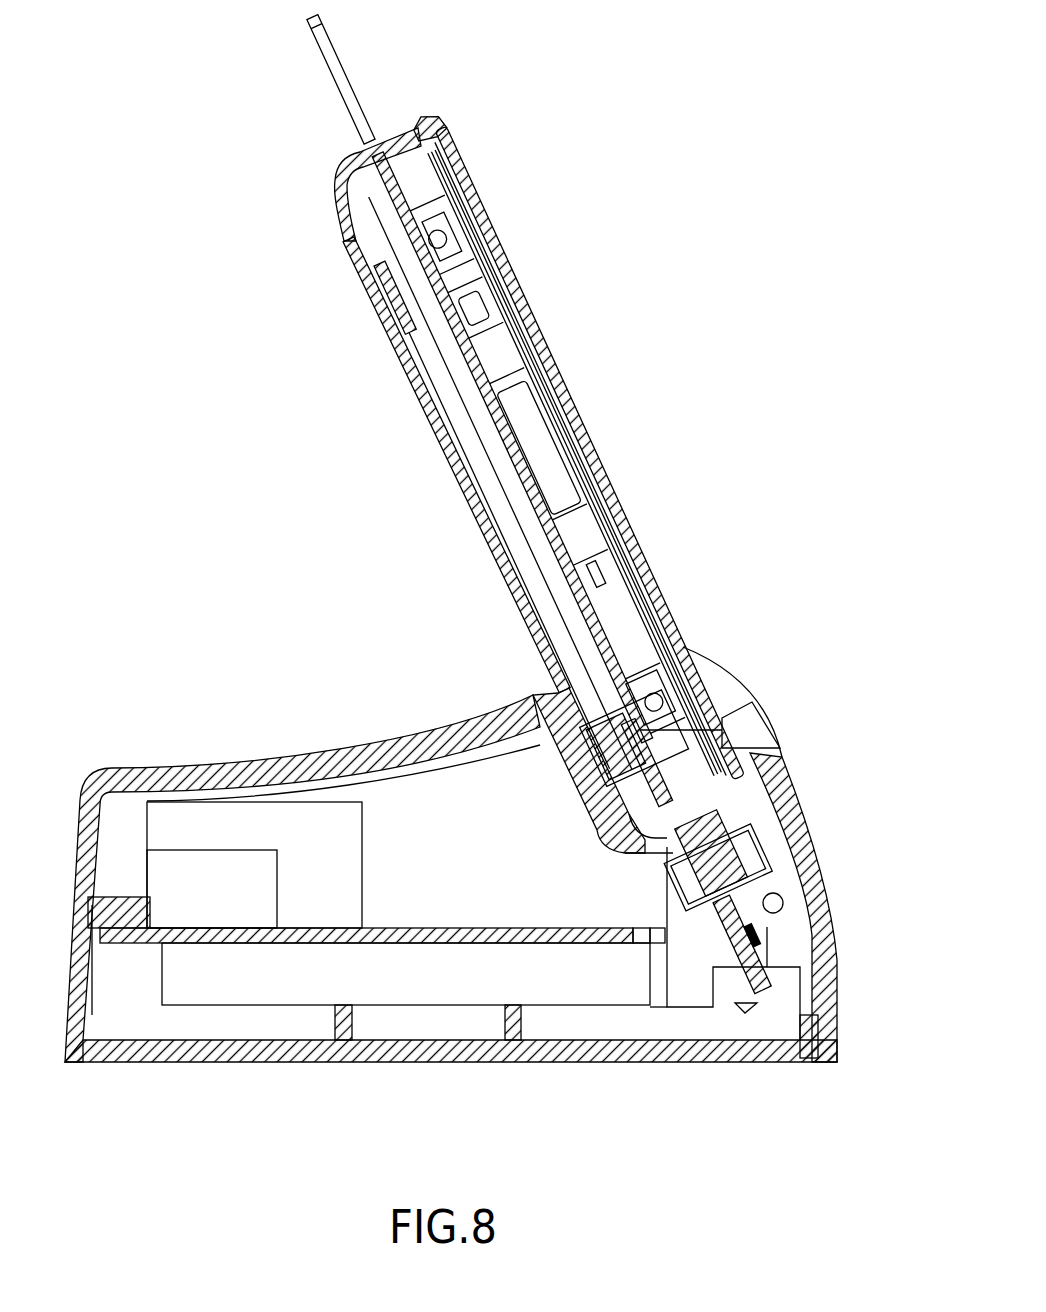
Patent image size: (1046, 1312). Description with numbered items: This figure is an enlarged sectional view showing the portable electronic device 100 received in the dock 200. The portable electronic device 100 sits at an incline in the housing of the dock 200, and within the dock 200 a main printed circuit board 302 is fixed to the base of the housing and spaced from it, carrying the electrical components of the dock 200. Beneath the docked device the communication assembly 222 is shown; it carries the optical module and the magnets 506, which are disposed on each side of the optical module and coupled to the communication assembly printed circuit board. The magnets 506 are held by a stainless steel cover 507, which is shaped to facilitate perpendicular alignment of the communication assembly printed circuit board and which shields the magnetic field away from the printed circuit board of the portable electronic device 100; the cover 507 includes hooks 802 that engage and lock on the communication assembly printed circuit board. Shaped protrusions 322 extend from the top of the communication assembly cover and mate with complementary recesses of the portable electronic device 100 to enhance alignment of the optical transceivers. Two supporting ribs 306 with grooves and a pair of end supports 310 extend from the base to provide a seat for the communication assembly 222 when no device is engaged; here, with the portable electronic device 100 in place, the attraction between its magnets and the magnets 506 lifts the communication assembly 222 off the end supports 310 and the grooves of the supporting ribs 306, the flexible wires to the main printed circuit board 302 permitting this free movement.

The portable electronic device 100 is at (600, 458).
The dock 200 is at (556, 1064).
The communication assembly 222 is at (752, 953).
The main printed circuit board 302 is at (731, 1013).
The supporting ribs 306 is at (783, 1027).
The end supports 310 is at (687, 993).
The protrusions 322 is at (738, 803).
The magnets 506 is at (712, 846).
The cover 507 is at (770, 871).
The hooks 802 is at (742, 908).